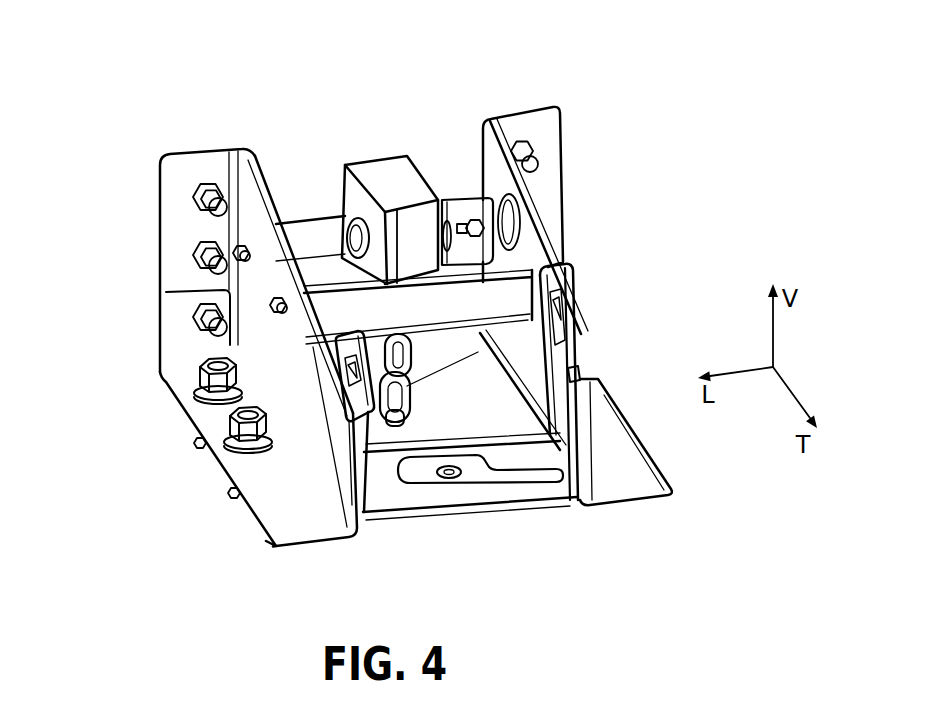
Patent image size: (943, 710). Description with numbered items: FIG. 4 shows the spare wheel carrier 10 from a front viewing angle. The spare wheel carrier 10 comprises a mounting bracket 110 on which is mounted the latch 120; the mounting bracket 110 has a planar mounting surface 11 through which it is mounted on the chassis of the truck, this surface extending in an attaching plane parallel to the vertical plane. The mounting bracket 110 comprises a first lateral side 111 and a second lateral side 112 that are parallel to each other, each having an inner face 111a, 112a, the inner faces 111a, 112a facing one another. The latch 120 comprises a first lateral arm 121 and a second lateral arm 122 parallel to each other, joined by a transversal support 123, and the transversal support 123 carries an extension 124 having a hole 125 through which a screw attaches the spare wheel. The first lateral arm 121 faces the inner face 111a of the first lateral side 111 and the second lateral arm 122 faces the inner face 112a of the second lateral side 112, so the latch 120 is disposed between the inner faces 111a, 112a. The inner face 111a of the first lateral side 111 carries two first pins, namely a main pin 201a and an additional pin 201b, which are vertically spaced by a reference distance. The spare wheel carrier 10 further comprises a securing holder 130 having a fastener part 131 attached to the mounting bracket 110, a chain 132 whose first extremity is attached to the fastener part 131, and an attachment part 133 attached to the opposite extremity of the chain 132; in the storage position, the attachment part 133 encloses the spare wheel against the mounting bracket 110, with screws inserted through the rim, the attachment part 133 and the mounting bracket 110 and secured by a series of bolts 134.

The spare wheel carrier 10 is at (650, 130).
The planar mounting surface 11 is at (190, 153).
The second lateral side 112 is at (258, 342).
The inner face 112a is at (272, 178).
The mounting bracket 110 is at (213, 417).
The bolts 134 is at (198, 396).
The first lateral side 111 is at (491, 148).
The inner face 111a is at (487, 160).
The fastener part 131 is at (383, 170).
The securing holder 130 is at (437, 263).
The latch 120 is at (543, 483).
The first lateral arm 121 is at (570, 307).
The second lateral arm 122 is at (337, 360).
The transversal support 123 is at (502, 488).
The extension 124 is at (417, 470).
The hole 125 is at (452, 476).
The chain 132 is at (388, 418).
The attachment part 133 is at (390, 437).
The main pin 201a is at (581, 490).
The additional pin 201b is at (574, 377).